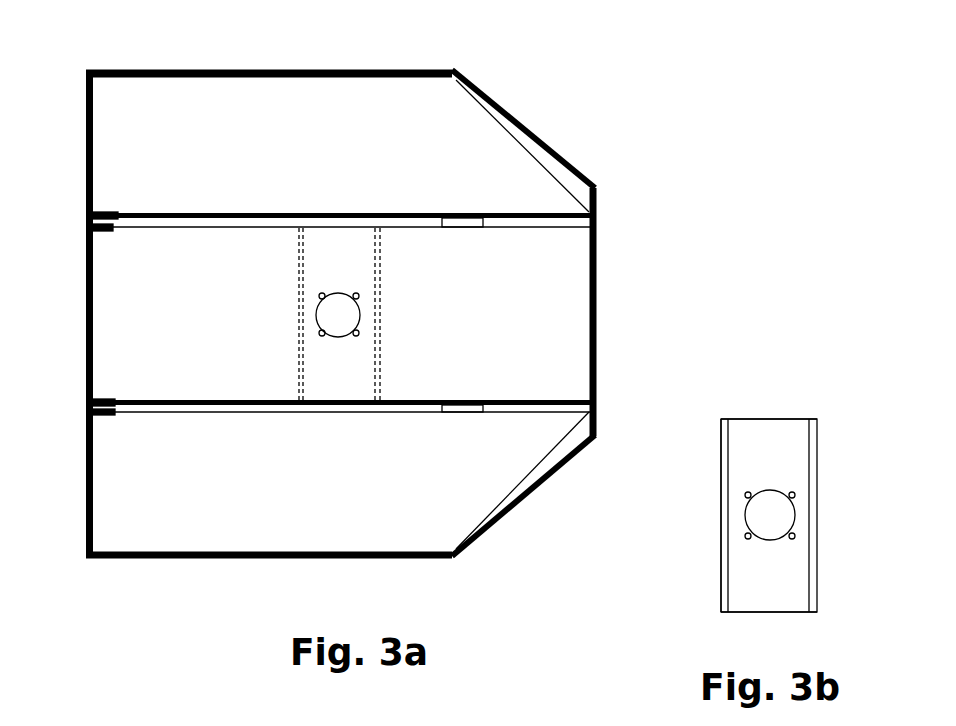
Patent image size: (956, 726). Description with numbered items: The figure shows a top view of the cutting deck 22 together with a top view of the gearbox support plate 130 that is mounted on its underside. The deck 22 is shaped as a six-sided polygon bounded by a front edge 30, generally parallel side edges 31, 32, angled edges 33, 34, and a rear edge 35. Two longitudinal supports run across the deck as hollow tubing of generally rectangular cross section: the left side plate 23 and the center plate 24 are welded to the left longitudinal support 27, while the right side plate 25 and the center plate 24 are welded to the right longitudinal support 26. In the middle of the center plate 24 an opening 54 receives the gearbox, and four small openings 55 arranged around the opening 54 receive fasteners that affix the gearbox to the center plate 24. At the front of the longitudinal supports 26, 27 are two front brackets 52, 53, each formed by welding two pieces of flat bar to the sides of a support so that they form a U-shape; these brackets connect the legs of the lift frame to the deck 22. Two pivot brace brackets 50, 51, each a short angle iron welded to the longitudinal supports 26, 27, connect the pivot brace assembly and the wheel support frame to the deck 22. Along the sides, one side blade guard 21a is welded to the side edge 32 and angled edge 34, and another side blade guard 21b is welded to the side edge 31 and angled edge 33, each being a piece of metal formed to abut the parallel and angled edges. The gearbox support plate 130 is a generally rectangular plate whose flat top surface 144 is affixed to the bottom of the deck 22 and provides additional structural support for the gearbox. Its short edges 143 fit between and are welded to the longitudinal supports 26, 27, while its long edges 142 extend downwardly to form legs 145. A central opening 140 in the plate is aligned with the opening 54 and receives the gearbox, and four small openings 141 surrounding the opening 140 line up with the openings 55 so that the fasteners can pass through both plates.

In FIG. 3A, the side blade guard 21a is at (392, 560).
In FIG. 3A, the side blade guard 21b is at (250, 68).
In FIG. 3A, the deck 22 is at (530, 74).
In FIG. 3A, the left side plate 23 is at (372, 490).
In FIG. 3A, the center plate 24 is at (235, 324).
In FIG. 3A, the right side plate 25 is at (328, 150).
In FIG. 3A, the right longitudinal support 26 is at (341, 236).
In FIG. 3A, the left longitudinal support 27 is at (341, 424).
In FIG. 3A, the front edge 30 is at (337, 309).
In FIG. 3A, the side edge 31 is at (360, 68).
In FIG. 3A, the side edge 32 is at (235, 560).
In FIG. 3A, the angled edge 33 is at (538, 140).
In FIG. 3A, the angled edge 34 is at (548, 478).
In FIG. 3A, the rear edge 35 is at (598, 300).
In FIG. 3A, the pivot brace bracket 50 is at (450, 228).
In FIG. 3A, the pivot brace bracket 51 is at (458, 412).
In FIG. 3A, the front bracket 52 is at (100, 224).
In FIG. 3A, the front bracket 53 is at (100, 416).
In FIG. 3A, the opening 54 is at (340, 293).
In FIG. 3A, the small openings 55 is at (358, 334).
In FIG. 3A, the gearbox support plate 130 is at (377, 268).
In FIG. 3B, the gearbox support plate 130 is at (716, 406).
In FIG. 3B, the central opening 140 is at (770, 515).
In FIG. 3B, the small openings 141 is at (750, 493).
In FIG. 3B, the long edges 142 is at (728, 495).
In FIG. 3B, the short edges 143 is at (763, 418).
In FIG. 3B, the top surface 144 is at (762, 453).
In FIG. 3B, the legs 145 is at (722, 553).